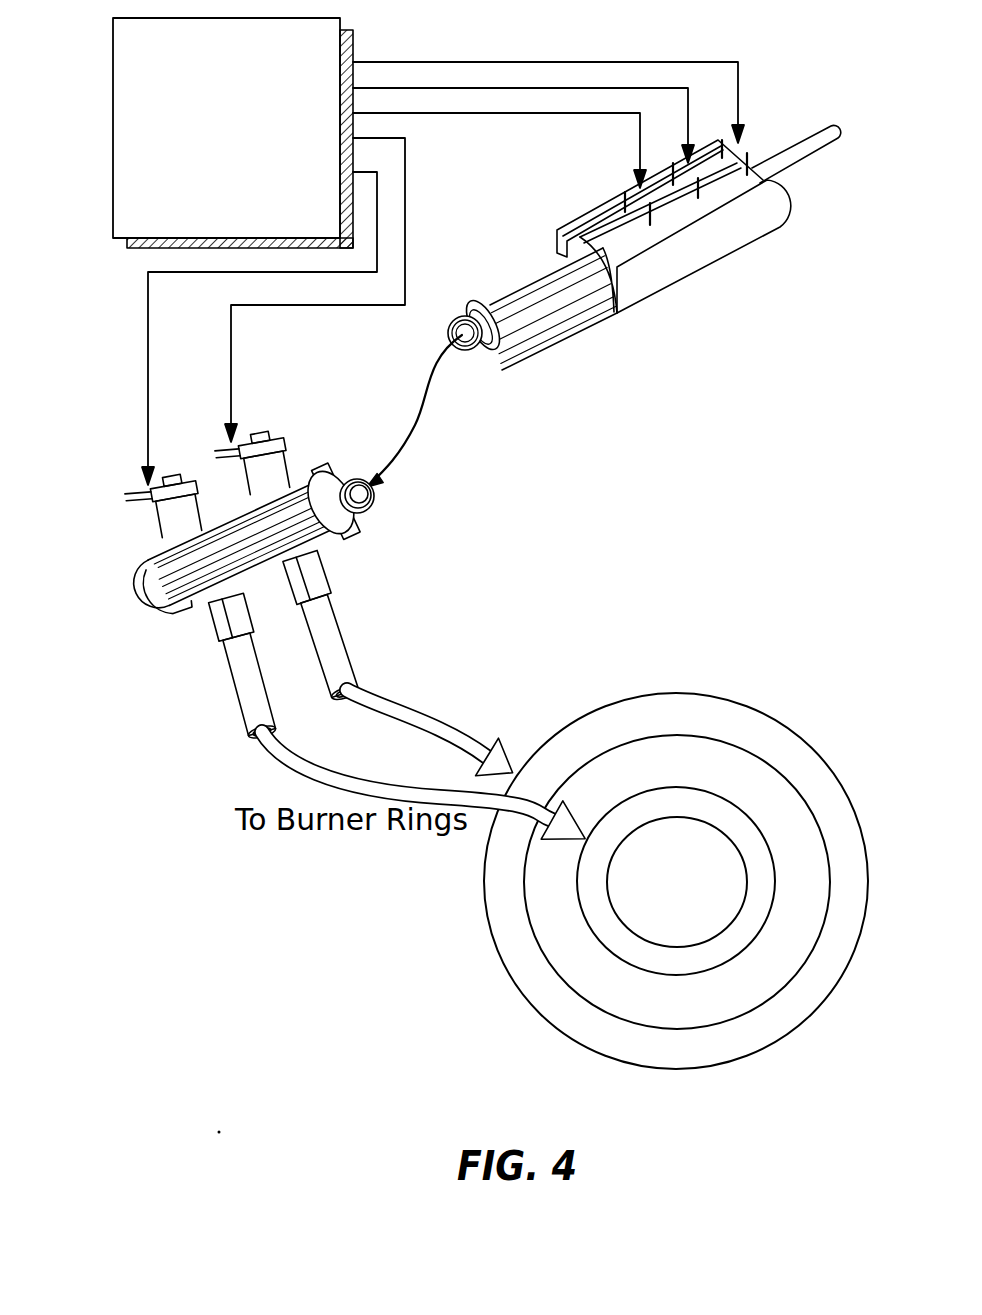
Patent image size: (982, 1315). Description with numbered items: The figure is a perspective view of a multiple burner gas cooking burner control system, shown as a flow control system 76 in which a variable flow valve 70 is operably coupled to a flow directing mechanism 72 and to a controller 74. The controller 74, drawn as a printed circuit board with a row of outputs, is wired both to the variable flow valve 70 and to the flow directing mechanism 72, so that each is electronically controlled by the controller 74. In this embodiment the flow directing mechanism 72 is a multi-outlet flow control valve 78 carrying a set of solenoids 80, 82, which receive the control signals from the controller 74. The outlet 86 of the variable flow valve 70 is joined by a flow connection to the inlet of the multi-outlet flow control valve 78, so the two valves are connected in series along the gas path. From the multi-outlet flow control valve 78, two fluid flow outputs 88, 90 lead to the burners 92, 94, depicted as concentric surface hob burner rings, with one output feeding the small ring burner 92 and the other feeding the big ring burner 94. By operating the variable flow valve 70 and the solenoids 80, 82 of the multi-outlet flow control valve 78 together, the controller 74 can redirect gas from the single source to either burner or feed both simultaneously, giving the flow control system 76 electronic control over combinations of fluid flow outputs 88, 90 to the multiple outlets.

The variable flow valve 70 is at (657, 247).
The flow directing mechanism 72 is at (323, 577).
The controller 74 is at (148, 172).
The flow control system 76 is at (692, 412).
The multi-outlet flow control valve 78 is at (137, 597).
The solenoid 80 is at (280, 477).
The solenoid 82 is at (177, 528).
The outlet of the variable flow valve 86 is at (450, 316).
The fluid flow output 88 is at (240, 698).
The fluid flow output 90 is at (343, 660).
The burner 92 is at (763, 885).
The burner 94 is at (803, 772).